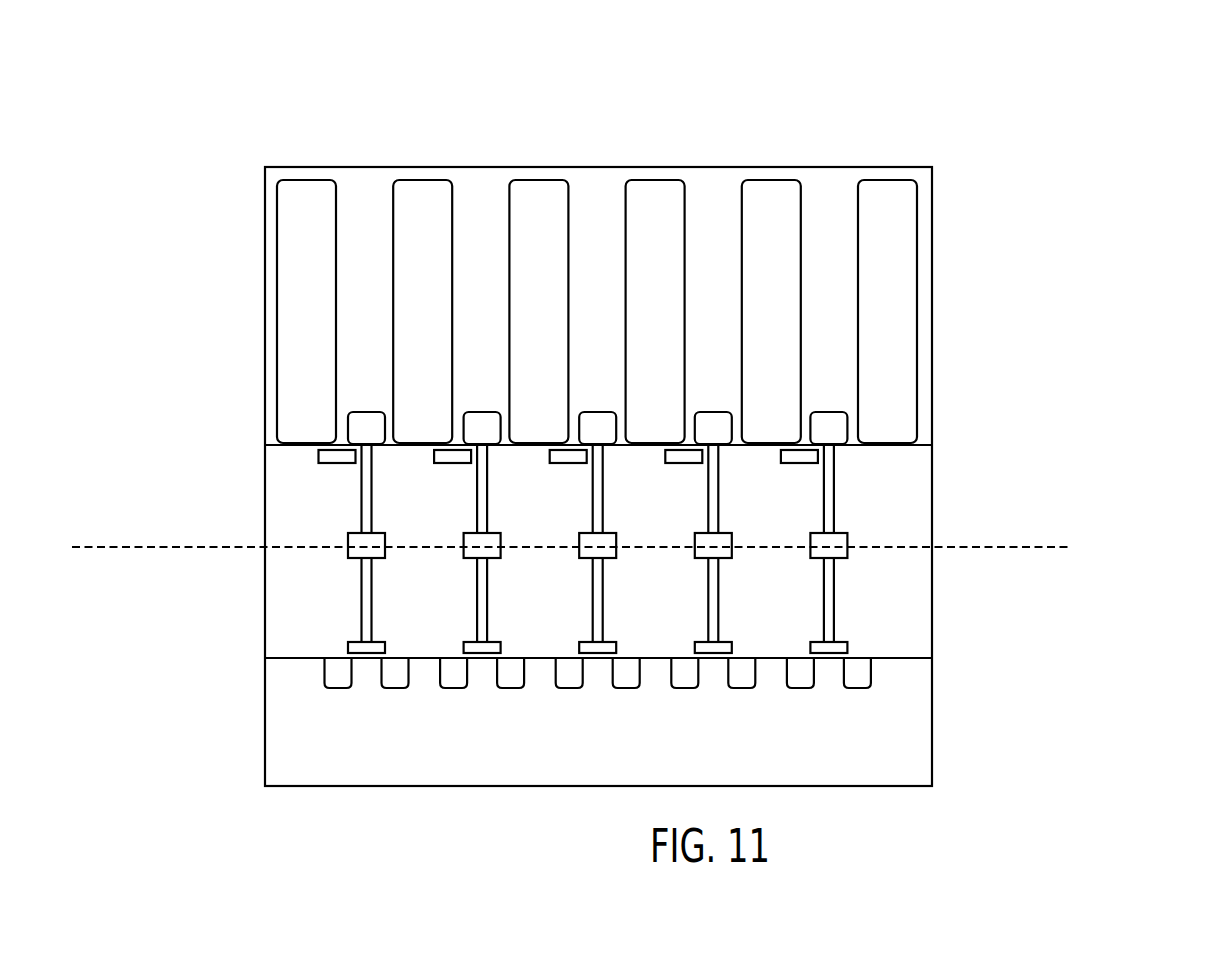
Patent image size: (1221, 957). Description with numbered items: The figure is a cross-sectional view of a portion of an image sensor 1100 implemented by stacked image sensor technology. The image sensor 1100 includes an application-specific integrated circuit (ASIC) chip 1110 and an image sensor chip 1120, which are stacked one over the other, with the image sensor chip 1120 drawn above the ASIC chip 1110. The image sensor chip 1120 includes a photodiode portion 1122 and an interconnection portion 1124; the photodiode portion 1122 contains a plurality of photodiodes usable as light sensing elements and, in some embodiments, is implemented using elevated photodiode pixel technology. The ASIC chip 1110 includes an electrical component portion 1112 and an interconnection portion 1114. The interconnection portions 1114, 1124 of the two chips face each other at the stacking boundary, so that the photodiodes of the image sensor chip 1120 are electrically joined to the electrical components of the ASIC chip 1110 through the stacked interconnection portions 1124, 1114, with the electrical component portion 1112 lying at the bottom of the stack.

The image sensor 1100 is at (1126, 104).
The image sensor chip 1120 is at (1122, 167).
The photodiode portion 1122 is at (1107, 446).
The interconnection portion 1124 is at (1037, 511).
The application-specific integrated circuit (ASIC) chip 1110 is at (1122, 549).
The interconnection portion 1114 is at (1107, 638).
The electrical component portion 1112 is at (1107, 786).